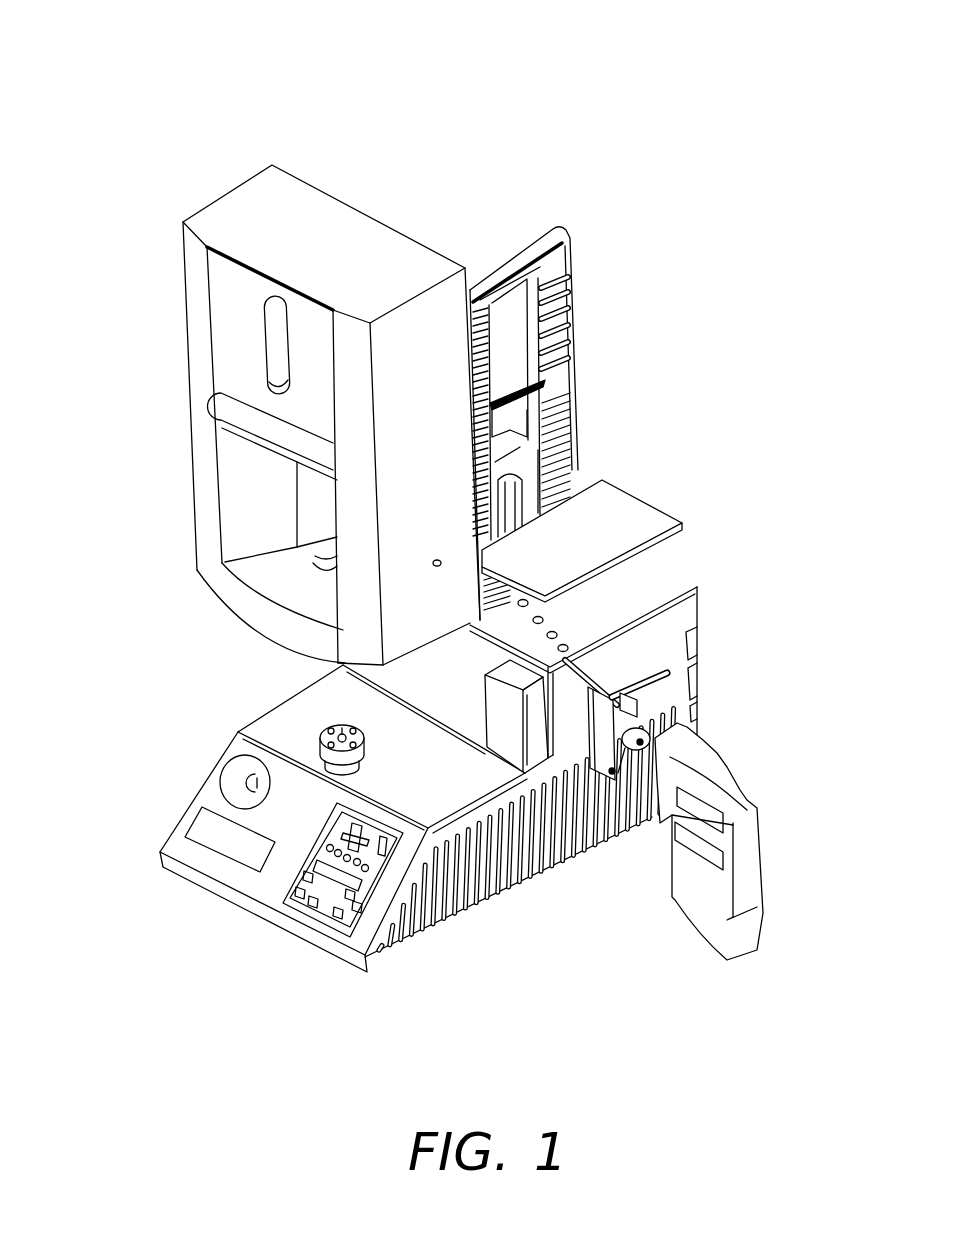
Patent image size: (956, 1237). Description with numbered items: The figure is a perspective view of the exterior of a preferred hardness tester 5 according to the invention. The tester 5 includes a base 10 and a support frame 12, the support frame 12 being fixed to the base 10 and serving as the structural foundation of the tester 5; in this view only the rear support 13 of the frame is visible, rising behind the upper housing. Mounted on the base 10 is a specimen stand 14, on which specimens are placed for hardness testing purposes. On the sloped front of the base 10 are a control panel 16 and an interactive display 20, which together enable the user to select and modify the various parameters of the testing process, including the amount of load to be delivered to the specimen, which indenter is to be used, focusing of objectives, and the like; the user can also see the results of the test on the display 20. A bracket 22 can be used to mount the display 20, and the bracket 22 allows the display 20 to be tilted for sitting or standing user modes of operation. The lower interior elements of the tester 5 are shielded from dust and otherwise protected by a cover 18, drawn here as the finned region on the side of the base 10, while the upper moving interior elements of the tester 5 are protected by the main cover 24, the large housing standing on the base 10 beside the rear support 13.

The hardness tester 5 is at (120, 127).
The base 10 is at (190, 885).
The support frame 12 is at (553, 222).
The rear support 13 is at (557, 258).
The specimen stand 14 is at (331, 722).
The control panel 16 is at (327, 905).
The cover 18 is at (455, 857).
The interactive display 20 is at (762, 934).
The bracket 22 is at (637, 808).
The main cover 24 is at (182, 335).